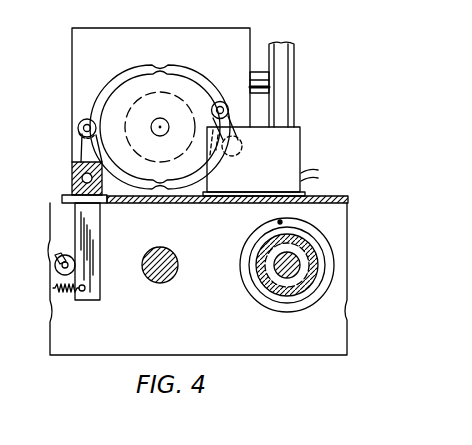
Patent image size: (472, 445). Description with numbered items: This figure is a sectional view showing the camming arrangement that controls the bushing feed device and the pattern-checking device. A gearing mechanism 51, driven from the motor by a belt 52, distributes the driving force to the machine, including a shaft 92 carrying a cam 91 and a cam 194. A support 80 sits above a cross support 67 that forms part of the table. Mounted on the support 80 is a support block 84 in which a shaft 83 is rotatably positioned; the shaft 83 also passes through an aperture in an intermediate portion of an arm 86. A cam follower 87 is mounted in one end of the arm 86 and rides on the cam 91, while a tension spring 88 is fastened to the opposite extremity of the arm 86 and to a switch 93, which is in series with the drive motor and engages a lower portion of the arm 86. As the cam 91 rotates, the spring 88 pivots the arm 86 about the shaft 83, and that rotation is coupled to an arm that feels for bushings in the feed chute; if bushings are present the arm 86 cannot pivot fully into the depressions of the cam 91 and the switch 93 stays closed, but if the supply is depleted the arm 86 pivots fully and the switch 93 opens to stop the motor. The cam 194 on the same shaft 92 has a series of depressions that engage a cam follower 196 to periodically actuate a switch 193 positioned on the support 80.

The gearing mechanism 51 is at (152, 29).
The belt 52 is at (285, 55).
The cross support 67 is at (348, 235).
The support 80 is at (190, 203).
The shaft 83 is at (72, 177).
The support block 84 is at (82, 162).
The arm 86 is at (100, 228).
The cam follower 87 is at (78, 122).
The tension spring 88 is at (60, 295).
The cam 91 is at (168, 62).
The shaft 92 is at (153, 124).
The switch 93 is at (54, 260).
The switch 193 is at (298, 137).
The cam 194 is at (128, 80).
The cam follower 196 is at (221, 101).